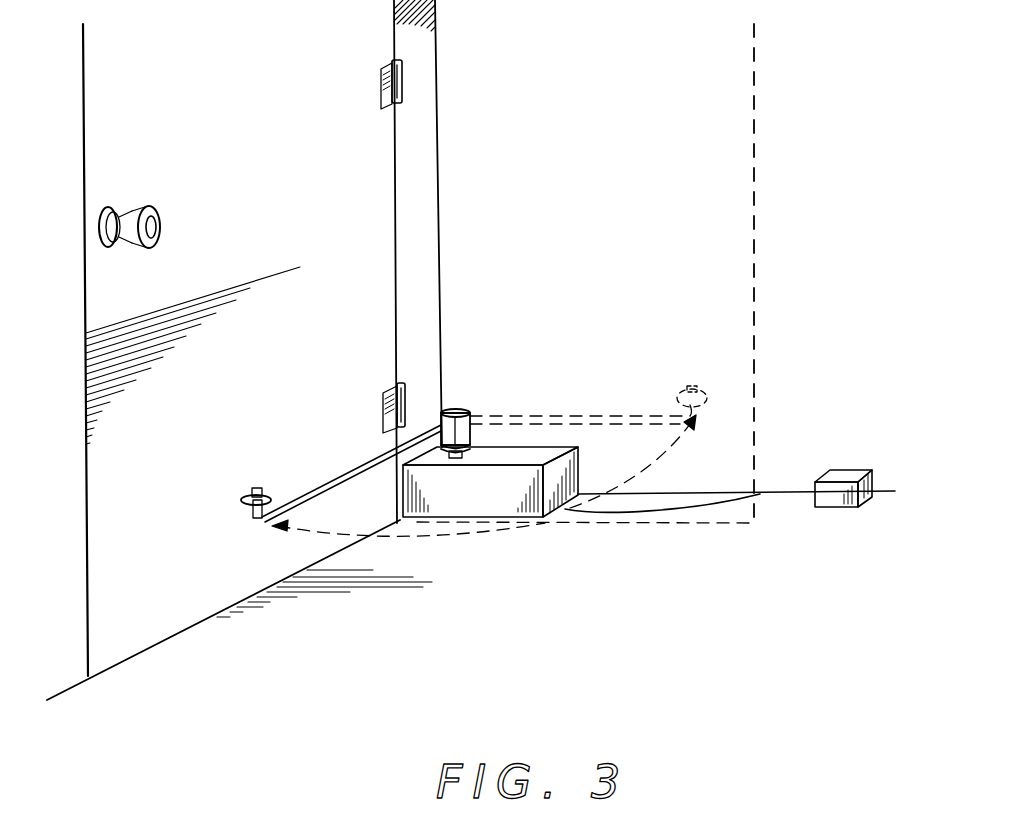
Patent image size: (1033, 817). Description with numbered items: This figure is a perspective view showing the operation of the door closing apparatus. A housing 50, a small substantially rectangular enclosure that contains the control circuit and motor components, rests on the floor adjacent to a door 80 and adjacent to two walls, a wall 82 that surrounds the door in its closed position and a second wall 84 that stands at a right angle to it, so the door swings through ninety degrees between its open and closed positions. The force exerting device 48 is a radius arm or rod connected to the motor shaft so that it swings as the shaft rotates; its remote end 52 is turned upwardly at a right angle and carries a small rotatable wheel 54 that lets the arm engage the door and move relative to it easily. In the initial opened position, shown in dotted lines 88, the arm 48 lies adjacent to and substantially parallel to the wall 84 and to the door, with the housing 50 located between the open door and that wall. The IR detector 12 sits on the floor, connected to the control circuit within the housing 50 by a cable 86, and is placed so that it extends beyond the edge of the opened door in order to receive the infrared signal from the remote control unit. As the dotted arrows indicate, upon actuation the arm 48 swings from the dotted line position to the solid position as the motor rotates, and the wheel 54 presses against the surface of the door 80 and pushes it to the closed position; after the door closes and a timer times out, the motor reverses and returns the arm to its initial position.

The IR detector 12 is at (830, 497).
The force exerting device 48 is at (336, 462).
The housing 50 is at (488, 492).
The remote end 52 is at (250, 518).
The wheel 54 is at (251, 490).
The door 80 is at (312, 340).
The wall 82 is at (423, 176).
The wall 84 is at (868, 351).
The cable 86 is at (700, 512).
The dotted lines 88 is at (755, 205).